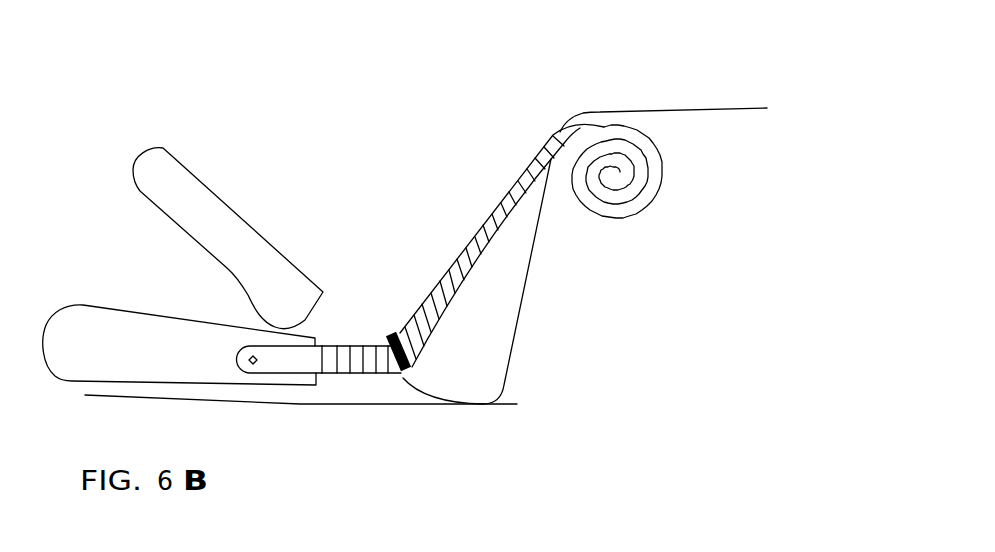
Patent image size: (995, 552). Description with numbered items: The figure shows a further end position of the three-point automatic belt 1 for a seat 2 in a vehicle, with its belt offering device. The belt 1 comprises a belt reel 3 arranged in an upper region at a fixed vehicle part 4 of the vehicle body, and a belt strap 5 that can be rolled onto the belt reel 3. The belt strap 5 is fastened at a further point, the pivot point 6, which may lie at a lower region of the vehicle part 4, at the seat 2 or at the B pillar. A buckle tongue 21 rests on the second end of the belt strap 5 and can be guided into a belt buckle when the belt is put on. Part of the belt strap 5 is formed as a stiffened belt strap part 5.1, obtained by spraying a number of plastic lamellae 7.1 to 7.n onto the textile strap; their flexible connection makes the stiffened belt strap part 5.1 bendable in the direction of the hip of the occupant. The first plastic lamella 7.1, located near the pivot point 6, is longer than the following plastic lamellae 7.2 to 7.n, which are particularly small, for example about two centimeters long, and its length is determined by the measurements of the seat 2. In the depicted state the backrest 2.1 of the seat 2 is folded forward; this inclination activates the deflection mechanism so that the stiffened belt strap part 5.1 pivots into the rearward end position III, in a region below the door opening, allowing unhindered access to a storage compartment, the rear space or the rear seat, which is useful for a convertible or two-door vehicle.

The three-point automatic belt 1 is at (92, 76).
The seat 2 is at (177, 170).
The backrest 2.1 is at (65, 321).
The belt reel 3 is at (650, 200).
The fixed vehicle part 4 is at (633, 109).
The belt strap 5 is at (512, 190).
The stiffened belt strap part 5.1 is at (372, 375).
The pivot point 6 is at (256, 373).
The first plastic lamella 7.1 is at (320, 376).
The plastic lamella 7.2 is at (333, 354).
The plastic lamella 7.n is at (401, 374).
The buckle tongue 21 is at (322, 289).
The end position III is at (329, 345).